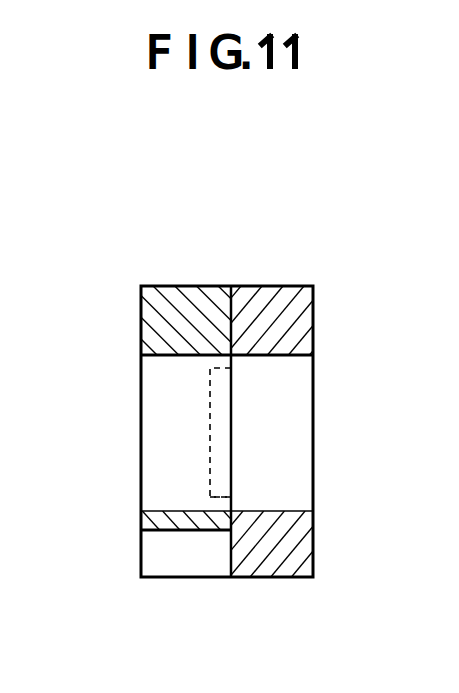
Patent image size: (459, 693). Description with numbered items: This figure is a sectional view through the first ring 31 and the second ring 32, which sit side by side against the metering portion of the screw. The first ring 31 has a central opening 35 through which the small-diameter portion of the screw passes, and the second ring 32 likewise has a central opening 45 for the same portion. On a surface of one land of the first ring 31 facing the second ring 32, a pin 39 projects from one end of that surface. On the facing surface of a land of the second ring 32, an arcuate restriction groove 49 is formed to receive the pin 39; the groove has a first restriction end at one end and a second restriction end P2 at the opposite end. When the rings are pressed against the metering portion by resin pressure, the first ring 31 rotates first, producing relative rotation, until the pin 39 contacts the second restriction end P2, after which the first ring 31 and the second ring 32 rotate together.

The first ring 31 is at (273, 280).
The second ring 32 is at (185, 280).
The central opening 35 is at (297, 442).
The pin 39 is at (232, 490).
The central opening 45 is at (165, 425).
The restriction groove 49 is at (215, 453).
The second restriction end P2 is at (210, 477).